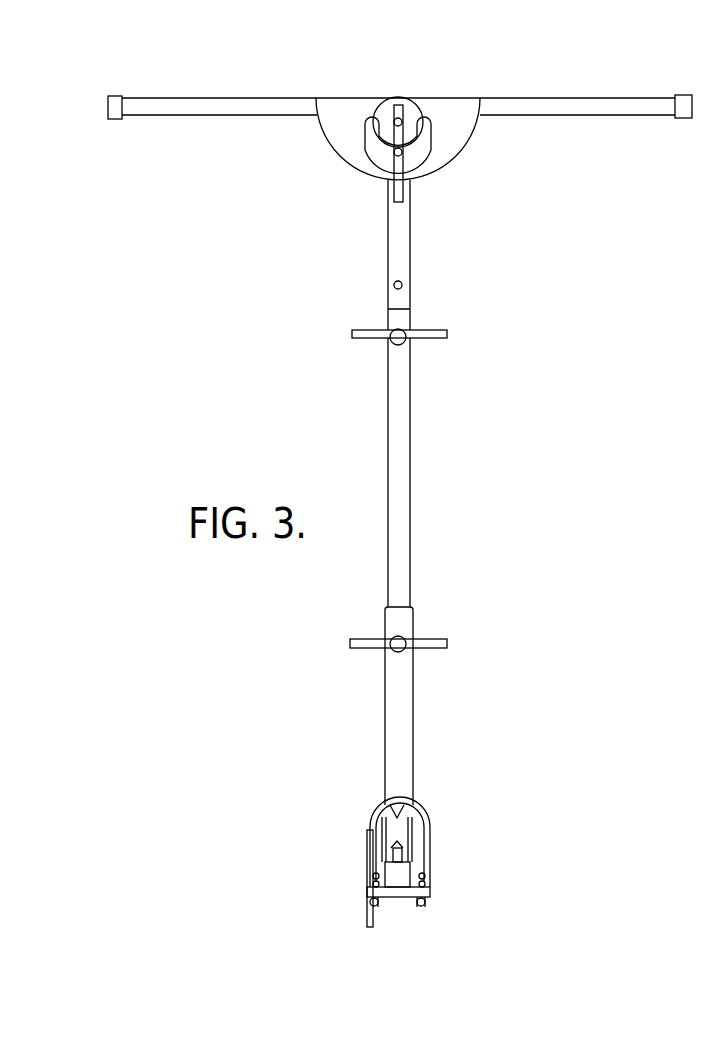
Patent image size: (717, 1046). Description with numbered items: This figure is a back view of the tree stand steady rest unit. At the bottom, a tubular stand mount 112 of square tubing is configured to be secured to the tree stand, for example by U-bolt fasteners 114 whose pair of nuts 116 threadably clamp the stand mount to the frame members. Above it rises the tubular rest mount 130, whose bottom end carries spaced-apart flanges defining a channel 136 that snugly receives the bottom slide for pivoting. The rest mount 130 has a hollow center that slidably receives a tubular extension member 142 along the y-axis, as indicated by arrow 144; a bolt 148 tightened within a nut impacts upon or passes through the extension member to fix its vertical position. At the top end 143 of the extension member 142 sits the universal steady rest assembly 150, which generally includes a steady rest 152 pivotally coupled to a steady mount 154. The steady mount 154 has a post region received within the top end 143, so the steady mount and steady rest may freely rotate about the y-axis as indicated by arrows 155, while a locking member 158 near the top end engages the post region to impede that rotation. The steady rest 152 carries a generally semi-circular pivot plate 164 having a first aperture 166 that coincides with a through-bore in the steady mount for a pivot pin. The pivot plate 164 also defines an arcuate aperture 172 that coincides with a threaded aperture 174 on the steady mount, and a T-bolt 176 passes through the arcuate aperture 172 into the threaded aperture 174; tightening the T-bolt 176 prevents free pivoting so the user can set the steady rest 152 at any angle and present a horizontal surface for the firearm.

The tubular stand mount 112 is at (393, 875).
The U-bolt fasteners 114 is at (427, 820).
The nuts 116 is at (423, 910).
The tubular rest mount 130 is at (413, 708).
The channel 136 is at (397, 812).
The tubular extension member 142 is at (410, 567).
The top end 143 is at (395, 312).
The arrow 144 is at (438, 515).
The bolt 148 is at (422, 639).
The universal steady rest assembly 150 is at (390, 205).
The steady rest 152 is at (268, 115).
The steady mount 154 is at (410, 235).
The arrows 155 is at (85, 74).
The locking member 158 is at (370, 338).
The pivot plate 164 is at (468, 140).
The first aperture 166 is at (410, 122).
The arcuate aperture 172 is at (397, 142).
The threaded aperture 174 is at (400, 150).
The T-bolt 176 is at (398, 122).